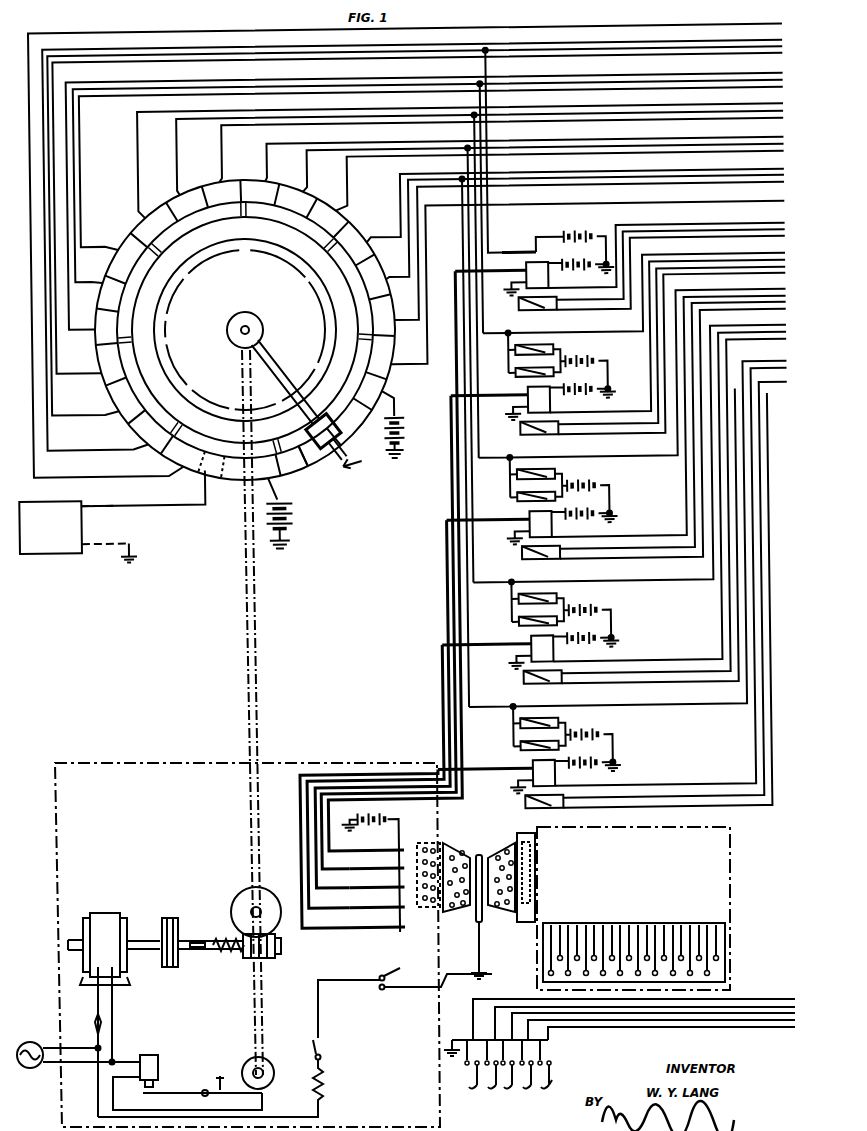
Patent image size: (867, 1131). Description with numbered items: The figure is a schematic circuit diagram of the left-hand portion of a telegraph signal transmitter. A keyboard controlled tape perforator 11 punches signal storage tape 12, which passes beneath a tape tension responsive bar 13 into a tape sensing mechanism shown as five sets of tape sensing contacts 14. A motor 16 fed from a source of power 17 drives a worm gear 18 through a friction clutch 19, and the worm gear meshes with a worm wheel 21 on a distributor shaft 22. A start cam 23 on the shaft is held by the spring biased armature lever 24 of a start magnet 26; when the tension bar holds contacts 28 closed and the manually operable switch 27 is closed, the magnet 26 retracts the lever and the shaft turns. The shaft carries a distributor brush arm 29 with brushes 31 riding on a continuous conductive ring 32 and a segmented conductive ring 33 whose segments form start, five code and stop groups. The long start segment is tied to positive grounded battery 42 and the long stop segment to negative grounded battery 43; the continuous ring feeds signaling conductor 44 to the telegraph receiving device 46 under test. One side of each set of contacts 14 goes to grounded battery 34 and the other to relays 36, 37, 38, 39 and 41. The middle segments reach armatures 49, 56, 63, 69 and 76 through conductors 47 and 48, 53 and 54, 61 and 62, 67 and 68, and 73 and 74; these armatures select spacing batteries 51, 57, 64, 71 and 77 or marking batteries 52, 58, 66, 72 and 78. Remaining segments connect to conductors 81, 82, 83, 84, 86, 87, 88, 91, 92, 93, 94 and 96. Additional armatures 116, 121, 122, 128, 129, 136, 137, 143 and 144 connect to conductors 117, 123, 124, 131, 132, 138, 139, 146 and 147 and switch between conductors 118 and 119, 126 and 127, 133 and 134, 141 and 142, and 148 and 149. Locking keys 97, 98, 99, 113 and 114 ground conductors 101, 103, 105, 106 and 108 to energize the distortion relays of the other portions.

The keyboard controlled tape perforator 11 is at (728, 859).
The signal storage tape 12 is at (505, 918).
The tape tension responsive bar 13 is at (471, 918).
The tape sensing contacts 14 is at (362, 930).
The motor 16 is at (112, 916).
The source of power 17 is at (39, 1045).
The worm gear 18 is at (266, 950).
The friction clutch 19 is at (170, 968).
The worm wheel 21 is at (245, 899).
The distributor shaft 22 is at (252, 808).
The start cam 23 is at (274, 1074).
The spring biased armature lever 24 is at (232, 1090).
The start magnet 26 is at (158, 1072).
The manually operable switch 27 is at (322, 1049).
The contacts 28 is at (392, 980).
The distributor brush arm 29 is at (256, 345).
The brushes 31 is at (341, 434).
The continuous conductive ring 32 is at (372, 370).
The segmented conductive ring 33 is at (300, 473).
The grounded battery 34 is at (386, 815).
The relay 36 is at (527, 281).
The relay 37 is at (527, 405).
The relay 38 is at (527, 529).
The relay 39 is at (527, 654).
The relay 41 is at (527, 778).
The grounded battery 42 is at (288, 520).
The grounded battery 43 is at (403, 432).
The signaling conductor 44 is at (205, 487).
The telegraph receiving device 46 is at (44, 497).
The conductor 47 is at (748, 53).
The conductor 48 is at (483, 222).
The armature 49 is at (530, 255).
The grounded battery 51 is at (598, 240).
The grounded battery 52 is at (602, 278).
The conductor 53 is at (748, 87).
The conductor 54 is at (489, 236).
The armature 56 is at (508, 376).
The battery 57 is at (598, 364).
The battery 58 is at (600, 390).
The conductor 61 is at (748, 118).
The conductor 62 is at (470, 238).
The armature 63 is at (508, 501).
The grounded spacing battery 64 is at (598, 489).
The grounded marking battery 66 is at (602, 527).
The conductor 67 is at (748, 151).
The conductor 68 is at (470, 569).
The armature 69 is at (508, 625).
The grounded spacing battery 71 is at (598, 613).
The grounded marking battery 72 is at (600, 639).
The conductor 73 is at (748, 182).
The conductor 74 is at (464, 606).
The armature 76 is at (508, 750).
The grounded spacing battery 77 is at (598, 738).
The grounded marking battery 78 is at (600, 764).
The conductor 81 is at (752, 31).
The conductor 82 is at (771, 60).
The conductor 83 is at (726, 47).
The conductor 84 is at (771, 94).
The conductor 86 is at (726, 80).
The conductor 87 is at (771, 125).
The conductor 88 is at (726, 110).
The conductor 91 is at (771, 158).
The conductor 92 is at (726, 144).
The conductor 93 is at (771, 189).
The conductor 94 is at (726, 176).
The conductor 96 is at (751, 208).
The locking key 97 is at (467, 1077).
The locking key 98 is at (495, 1030).
The locking key 99 is at (473, 1005).
The conductor 101 is at (771, 999).
The conductor 103 is at (742, 1028).
The conductor 105 is at (692, 1021).
The conductor 106 is at (638, 1014).
The conductor 108 is at (592, 1008).
The locking key 113 is at (524, 1008).
The locking key 114 is at (549, 1085).
The armature 116 is at (519, 309).
The conductor 117 is at (729, 231).
The conductor 118 is at (777, 244).
The conductor 119 is at (752, 237).
The armature 121 is at (508, 353).
The armature 122 is at (519, 433).
The conductor 123 is at (764, 280).
The conductor 124 is at (687, 261).
The conductor 126 is at (737, 274).
The conductor 127 is at (711, 267).
The armature 128 is at (508, 478).
The armature 129 is at (519, 558).
The conductor 131 is at (783, 316).
The conductor 132 is at (709, 297).
The conductor 133 is at (759, 310).
The conductor 134 is at (733, 303).
The armature 136 is at (508, 602).
The armature 137 is at (519, 682).
The conductor 138 is at (779, 346).
The conductor 139 is at (734, 355).
The conductor 141 is at (754, 339).
The conductor 142 is at (731, 333).
The armature 143 is at (508, 727).
The armature 144 is at (519, 807).
The conductor 146 is at (780, 375).
The conductor 147 is at (766, 405).
The conductor 148 is at (756, 369).
The conductor 149 is at (762, 392).